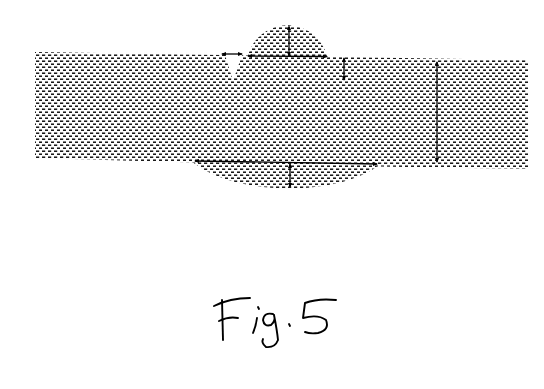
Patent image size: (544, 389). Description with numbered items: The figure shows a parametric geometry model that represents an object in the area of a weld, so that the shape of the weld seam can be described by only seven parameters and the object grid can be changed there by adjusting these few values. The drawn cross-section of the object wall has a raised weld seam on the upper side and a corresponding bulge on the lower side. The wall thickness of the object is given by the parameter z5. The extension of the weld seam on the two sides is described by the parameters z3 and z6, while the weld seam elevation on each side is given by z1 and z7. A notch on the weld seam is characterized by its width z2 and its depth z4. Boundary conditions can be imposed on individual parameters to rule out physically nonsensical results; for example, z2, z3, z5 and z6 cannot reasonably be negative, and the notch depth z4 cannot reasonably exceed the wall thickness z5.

The weld seam elevation z1 is at (305, 41).
The notch width z2 is at (232, 47).
The weld seam extension z3 is at (287, 68).
The notch depth z4 is at (360, 69).
The wall thickness z5 is at (461, 112).
The weld seam extension z6 is at (286, 155).
The weld seam elevation z7 is at (310, 175).